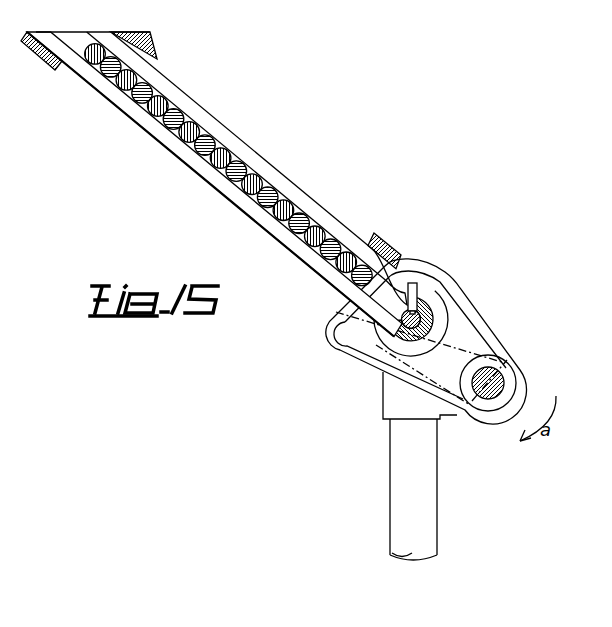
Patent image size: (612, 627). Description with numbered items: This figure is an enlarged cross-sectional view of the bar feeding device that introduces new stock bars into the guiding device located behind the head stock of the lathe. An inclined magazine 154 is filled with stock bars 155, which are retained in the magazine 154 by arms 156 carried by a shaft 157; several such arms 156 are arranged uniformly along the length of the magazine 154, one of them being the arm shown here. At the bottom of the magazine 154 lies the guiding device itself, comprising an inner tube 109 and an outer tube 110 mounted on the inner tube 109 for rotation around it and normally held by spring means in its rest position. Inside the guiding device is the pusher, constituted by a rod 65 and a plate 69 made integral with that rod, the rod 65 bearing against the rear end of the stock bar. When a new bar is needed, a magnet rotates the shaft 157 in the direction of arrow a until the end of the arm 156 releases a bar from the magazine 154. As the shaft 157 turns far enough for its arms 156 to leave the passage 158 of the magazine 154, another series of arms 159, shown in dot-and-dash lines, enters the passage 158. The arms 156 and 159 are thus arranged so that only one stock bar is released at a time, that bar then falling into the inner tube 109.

The inclined magazine 154 is at (268, 173).
The stock bars 155 is at (319, 230).
The arms 156 is at (402, 260).
The shaft 157 is at (500, 383).
The passage 158 is at (77, 37).
The arms 159 is at (332, 353).
The rod 65 is at (421, 312).
The plate 69 is at (419, 284).
The inner tube 109 is at (436, 318).
The outer tube 110 is at (438, 330).